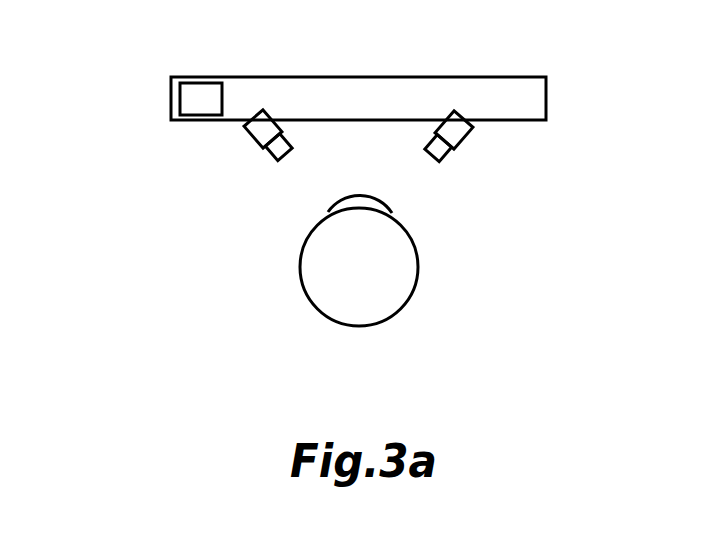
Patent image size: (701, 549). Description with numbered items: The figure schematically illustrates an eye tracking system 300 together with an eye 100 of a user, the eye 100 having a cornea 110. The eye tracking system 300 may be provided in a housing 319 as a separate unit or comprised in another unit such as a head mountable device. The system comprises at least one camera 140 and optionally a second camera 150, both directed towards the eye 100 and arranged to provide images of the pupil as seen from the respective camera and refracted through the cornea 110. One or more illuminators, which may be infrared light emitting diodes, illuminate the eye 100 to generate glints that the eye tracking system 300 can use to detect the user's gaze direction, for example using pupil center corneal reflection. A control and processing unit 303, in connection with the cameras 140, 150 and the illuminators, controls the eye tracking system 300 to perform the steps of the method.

The eye tracking system 300 is at (120, 47).
The control and processing unit 303 is at (198, 97).
The housing 319 is at (523, 103).
The camera 140 is at (266, 91).
The second camera 150 is at (453, 106).
The eye 100 is at (307, 270).
The cornea 110 is at (383, 202).